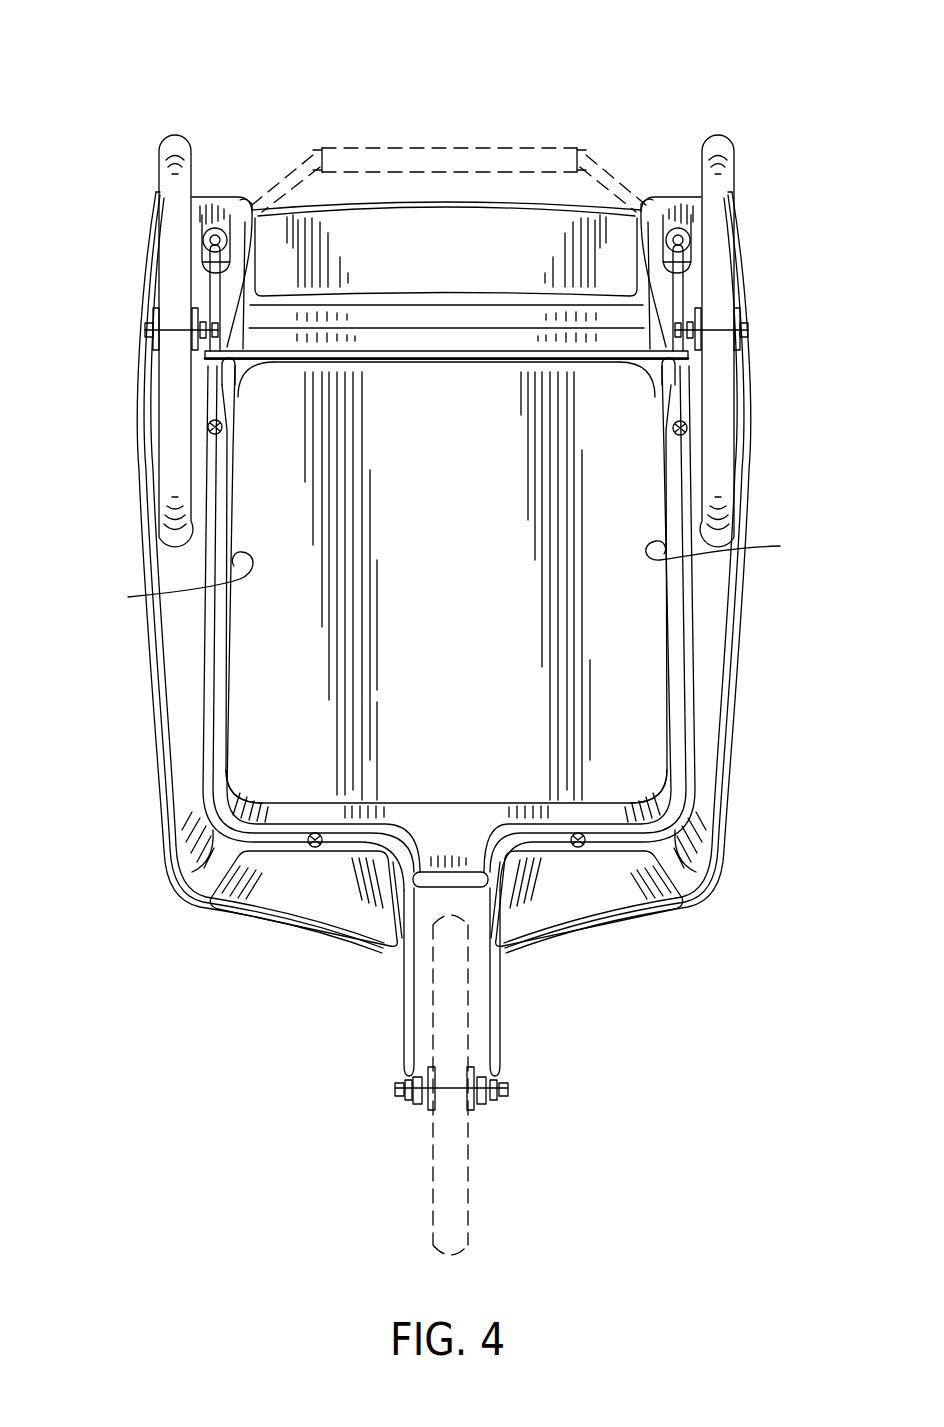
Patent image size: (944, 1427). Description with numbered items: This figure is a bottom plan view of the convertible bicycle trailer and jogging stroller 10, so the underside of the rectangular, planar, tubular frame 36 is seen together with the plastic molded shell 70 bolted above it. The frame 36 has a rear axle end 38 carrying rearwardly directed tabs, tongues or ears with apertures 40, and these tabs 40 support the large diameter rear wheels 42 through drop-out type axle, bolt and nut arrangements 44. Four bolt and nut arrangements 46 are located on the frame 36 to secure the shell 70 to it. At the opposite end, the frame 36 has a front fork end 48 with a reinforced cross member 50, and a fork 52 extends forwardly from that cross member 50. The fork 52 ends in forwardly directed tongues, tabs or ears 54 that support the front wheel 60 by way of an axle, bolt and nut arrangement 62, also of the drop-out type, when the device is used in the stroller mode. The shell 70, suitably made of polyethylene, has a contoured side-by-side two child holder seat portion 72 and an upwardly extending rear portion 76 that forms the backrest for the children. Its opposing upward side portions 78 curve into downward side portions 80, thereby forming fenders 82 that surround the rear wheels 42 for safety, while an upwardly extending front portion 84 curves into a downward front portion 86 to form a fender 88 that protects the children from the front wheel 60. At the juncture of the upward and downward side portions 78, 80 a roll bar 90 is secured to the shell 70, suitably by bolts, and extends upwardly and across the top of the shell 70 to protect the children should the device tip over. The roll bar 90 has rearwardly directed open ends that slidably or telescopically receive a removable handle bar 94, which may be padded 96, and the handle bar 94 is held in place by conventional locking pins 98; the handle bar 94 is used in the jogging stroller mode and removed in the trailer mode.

The convertible bicycle trailer and jogging stroller 10 is at (504, 86).
The tubular frame 36 is at (684, 604).
The rear axle end 38 is at (378, 353).
The tabs with apertures 40 is at (250, 202).
The rear wheels 42 is at (168, 186).
The axle, bolt and nut arrangements 44 is at (144, 330).
The bolt and nut arrangements 46 is at (686, 430).
The front fork end 48 is at (398, 872).
The reinforced cross member 50 is at (458, 882).
The fork 52 is at (490, 988).
The tongues 54 is at (492, 1100).
The front wheel 60 is at (472, 1186).
The axle, bolt and nut arrangement 62 is at (506, 1088).
The plastic molded shell 70 is at (620, 665).
The seat portion 72 is at (447, 538).
The rear portion 76 is at (443, 245).
The upward side portion 78 is at (453, 571).
The downward side portions 80 is at (150, 468).
The fenders 82 is at (444, 570).
The upwardly extending front portion 84 is at (288, 820).
The downward front portion 86 is at (338, 910).
The fender 88 is at (471, 856).
The roll bar 90 is at (210, 283).
The handle bar 94 is at (568, 146).
The padding 96 is at (406, 146).
The locking pins 98 is at (236, 243).